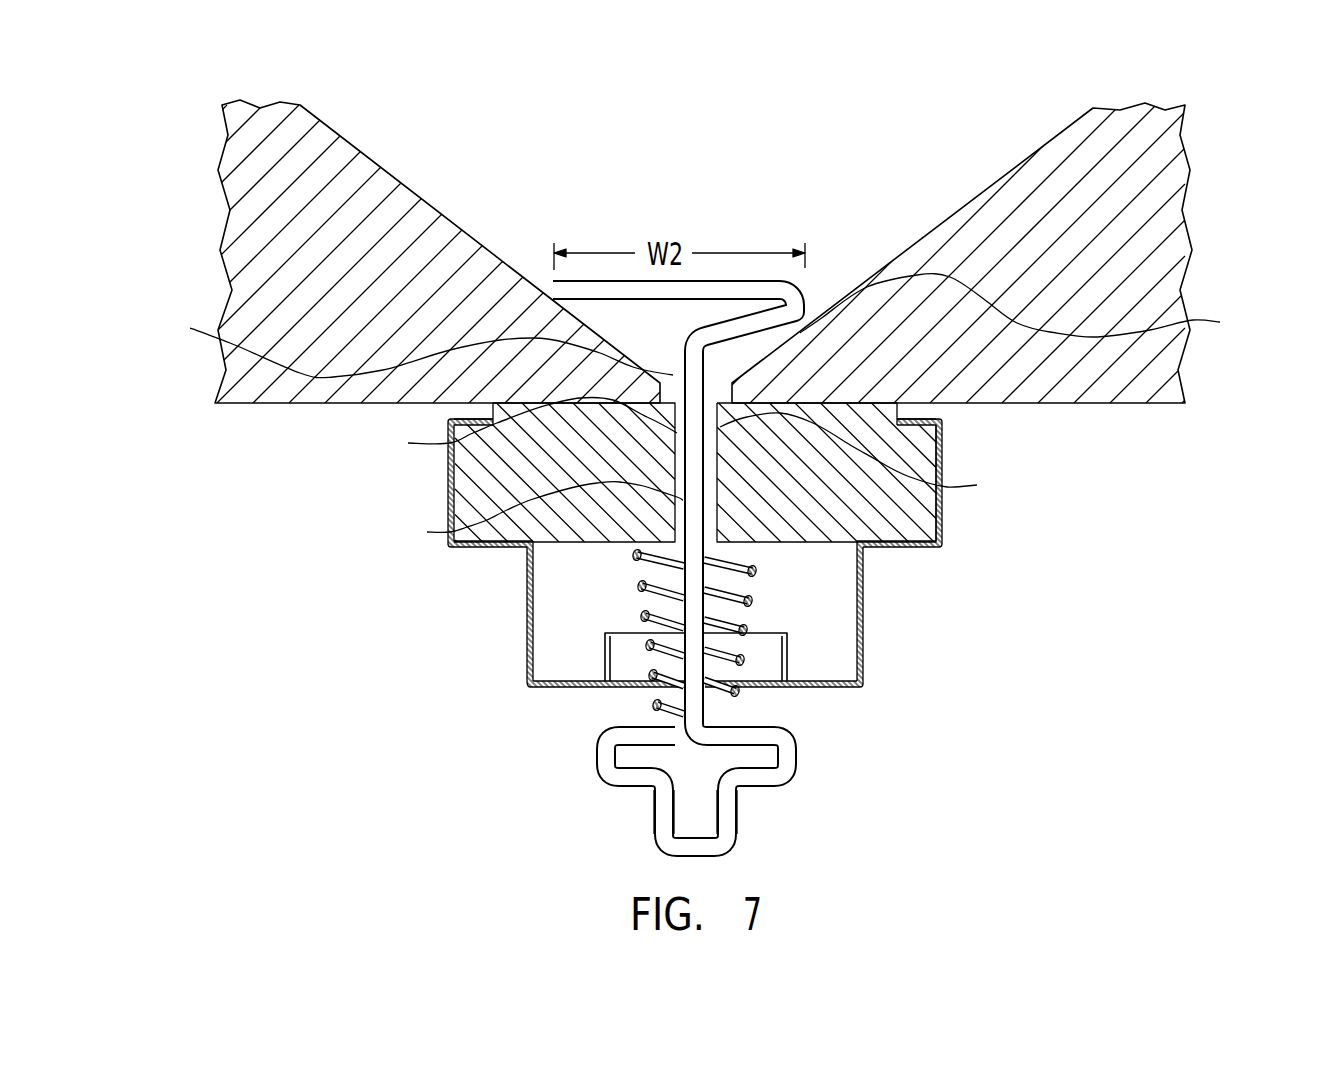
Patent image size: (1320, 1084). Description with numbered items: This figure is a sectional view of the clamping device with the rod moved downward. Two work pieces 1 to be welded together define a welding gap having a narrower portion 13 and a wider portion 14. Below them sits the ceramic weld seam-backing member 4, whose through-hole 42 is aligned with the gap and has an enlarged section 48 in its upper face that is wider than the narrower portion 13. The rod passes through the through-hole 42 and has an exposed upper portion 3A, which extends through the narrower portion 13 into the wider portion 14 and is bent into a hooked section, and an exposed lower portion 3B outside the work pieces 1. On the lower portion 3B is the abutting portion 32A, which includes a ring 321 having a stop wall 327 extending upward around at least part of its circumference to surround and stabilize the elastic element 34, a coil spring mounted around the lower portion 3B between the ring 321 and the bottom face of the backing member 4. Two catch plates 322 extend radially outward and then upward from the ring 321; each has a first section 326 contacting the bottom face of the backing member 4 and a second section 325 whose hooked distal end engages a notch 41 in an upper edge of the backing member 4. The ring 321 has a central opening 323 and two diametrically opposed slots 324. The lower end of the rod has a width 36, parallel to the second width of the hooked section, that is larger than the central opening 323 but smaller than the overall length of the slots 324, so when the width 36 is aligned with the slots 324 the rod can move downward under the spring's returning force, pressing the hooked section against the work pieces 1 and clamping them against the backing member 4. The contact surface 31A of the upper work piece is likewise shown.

The work piece 1 is at (448, 223).
The wider portion 14 is at (867, 188).
The upper portion 3A is at (406, 344).
The second contact surface of terminal 31A is at (1039, 306).
The narrower portion 13 is at (521, 431).
The weld seam-backing member 4 is at (473, 493).
The notch 41 is at (925, 412).
The through-hole 42 is at (534, 515).
The enlarged section 48 is at (867, 459).
The catch plate 322 is at (507, 588).
The second section 325 is at (942, 526).
The first section 326 is at (900, 548).
The abutting portion 32A is at (883, 700).
The central opening 323 is at (633, 690).
The slot 324 is at (800, 690).
The ring 321 is at (837, 690).
The stop wall 327 is at (615, 653).
The elastic element 34 is at (640, 585).
The width 36 is at (650, 813).
The lower portion 3B is at (757, 807).